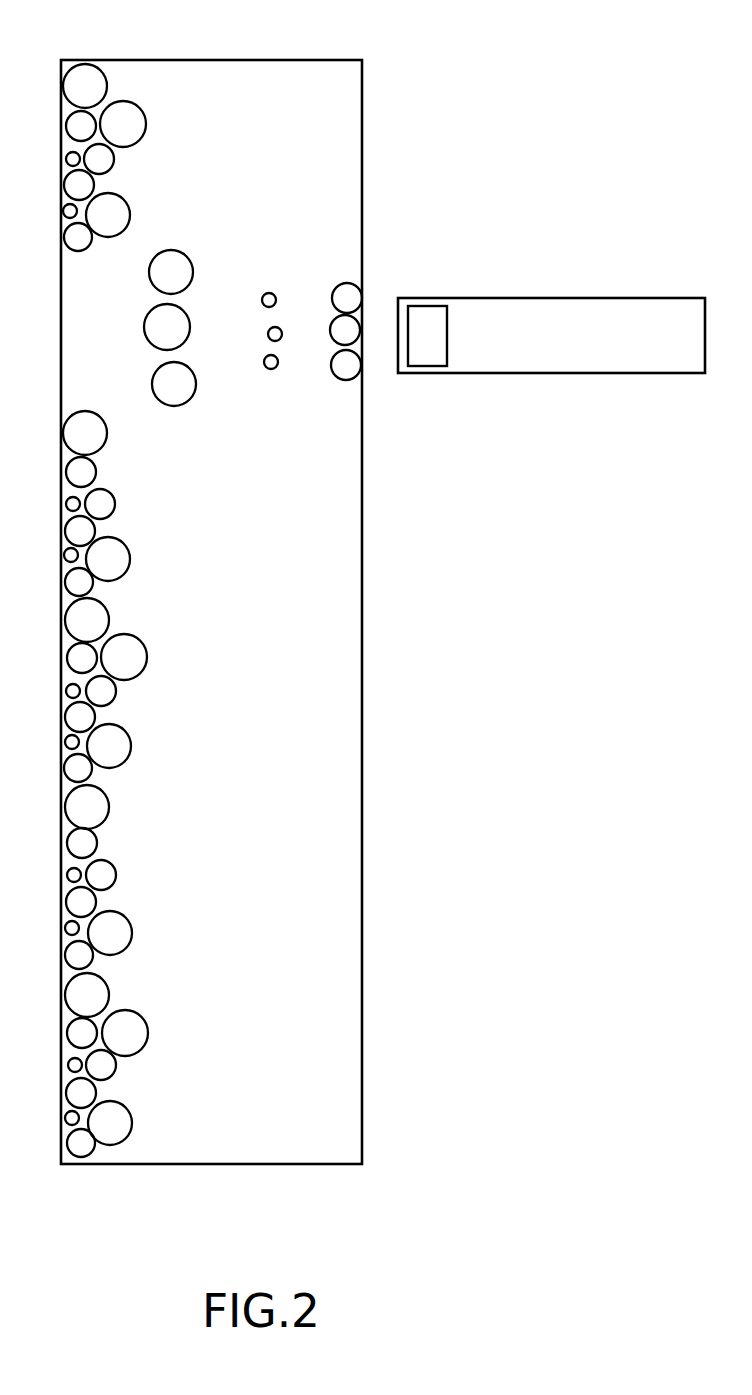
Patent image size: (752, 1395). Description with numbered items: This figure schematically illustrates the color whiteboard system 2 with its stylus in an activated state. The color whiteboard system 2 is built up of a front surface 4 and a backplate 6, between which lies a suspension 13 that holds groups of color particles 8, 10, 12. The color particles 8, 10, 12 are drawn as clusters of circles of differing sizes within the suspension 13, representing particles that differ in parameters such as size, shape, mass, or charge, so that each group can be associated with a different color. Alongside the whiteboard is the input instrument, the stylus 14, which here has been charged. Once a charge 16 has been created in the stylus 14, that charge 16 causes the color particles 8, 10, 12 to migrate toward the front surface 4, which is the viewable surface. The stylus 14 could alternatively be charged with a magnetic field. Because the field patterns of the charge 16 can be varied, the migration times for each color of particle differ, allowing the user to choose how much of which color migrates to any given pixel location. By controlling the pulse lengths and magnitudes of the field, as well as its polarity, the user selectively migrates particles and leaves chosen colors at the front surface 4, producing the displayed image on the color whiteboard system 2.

The color whiteboard system 2 is at (475, 52).
The front surface 4 is at (362, 157).
The backplate 6 is at (61, 350).
The color particles 8 is at (180, 398).
The color particles 10 is at (352, 376).
The color particles 12 is at (276, 368).
The suspension 13 is at (325, 702).
The input instrument (stylus) 14 is at (585, 347).
The charge 16 is at (423, 306).